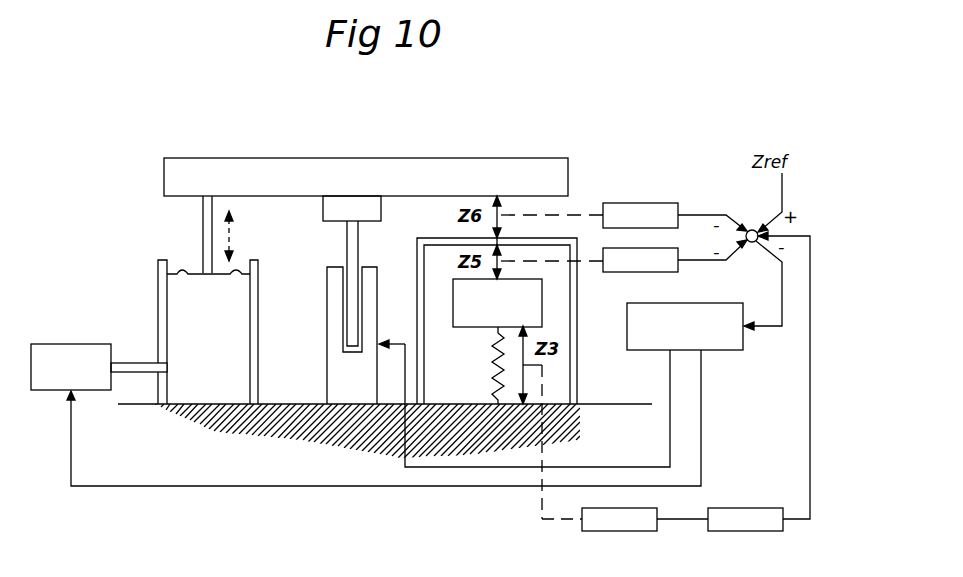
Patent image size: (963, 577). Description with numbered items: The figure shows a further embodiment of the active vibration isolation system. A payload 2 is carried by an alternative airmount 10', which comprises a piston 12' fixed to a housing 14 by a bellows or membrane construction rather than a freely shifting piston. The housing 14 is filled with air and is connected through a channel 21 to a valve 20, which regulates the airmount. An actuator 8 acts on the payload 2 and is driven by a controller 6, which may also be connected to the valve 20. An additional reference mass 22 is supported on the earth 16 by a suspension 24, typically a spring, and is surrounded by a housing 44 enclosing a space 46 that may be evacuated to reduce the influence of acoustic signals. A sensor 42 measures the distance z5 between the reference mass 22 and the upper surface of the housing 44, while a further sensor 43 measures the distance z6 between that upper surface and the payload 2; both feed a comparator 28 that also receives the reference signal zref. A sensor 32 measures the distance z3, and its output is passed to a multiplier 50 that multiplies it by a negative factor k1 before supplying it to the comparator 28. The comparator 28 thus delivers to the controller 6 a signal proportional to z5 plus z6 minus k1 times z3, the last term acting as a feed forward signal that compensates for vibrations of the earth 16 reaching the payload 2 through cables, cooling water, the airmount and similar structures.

The payload 2 is at (307, 170).
The alternative airmount 10' is at (260, 234).
The actuator 8 is at (331, 257).
The additional reference mass 22 is at (462, 307).
The further sensor 43 is at (647, 210).
The sensor 42 is at (655, 268).
The comparator 28 is at (746, 229).
The controller 6 is at (722, 316).
The channel 21 is at (131, 362).
The piston 12' is at (208, 297).
The housing 14 is at (230, 353).
The suspension 24 is at (497, 364).
The housing 44 is at (573, 328).
The space 46 is at (558, 376).
The earth 16 is at (562, 418).
The valve 20 is at (40, 390).
The sensor 32 is at (634, 531).
The multiplier 50 is at (760, 531).